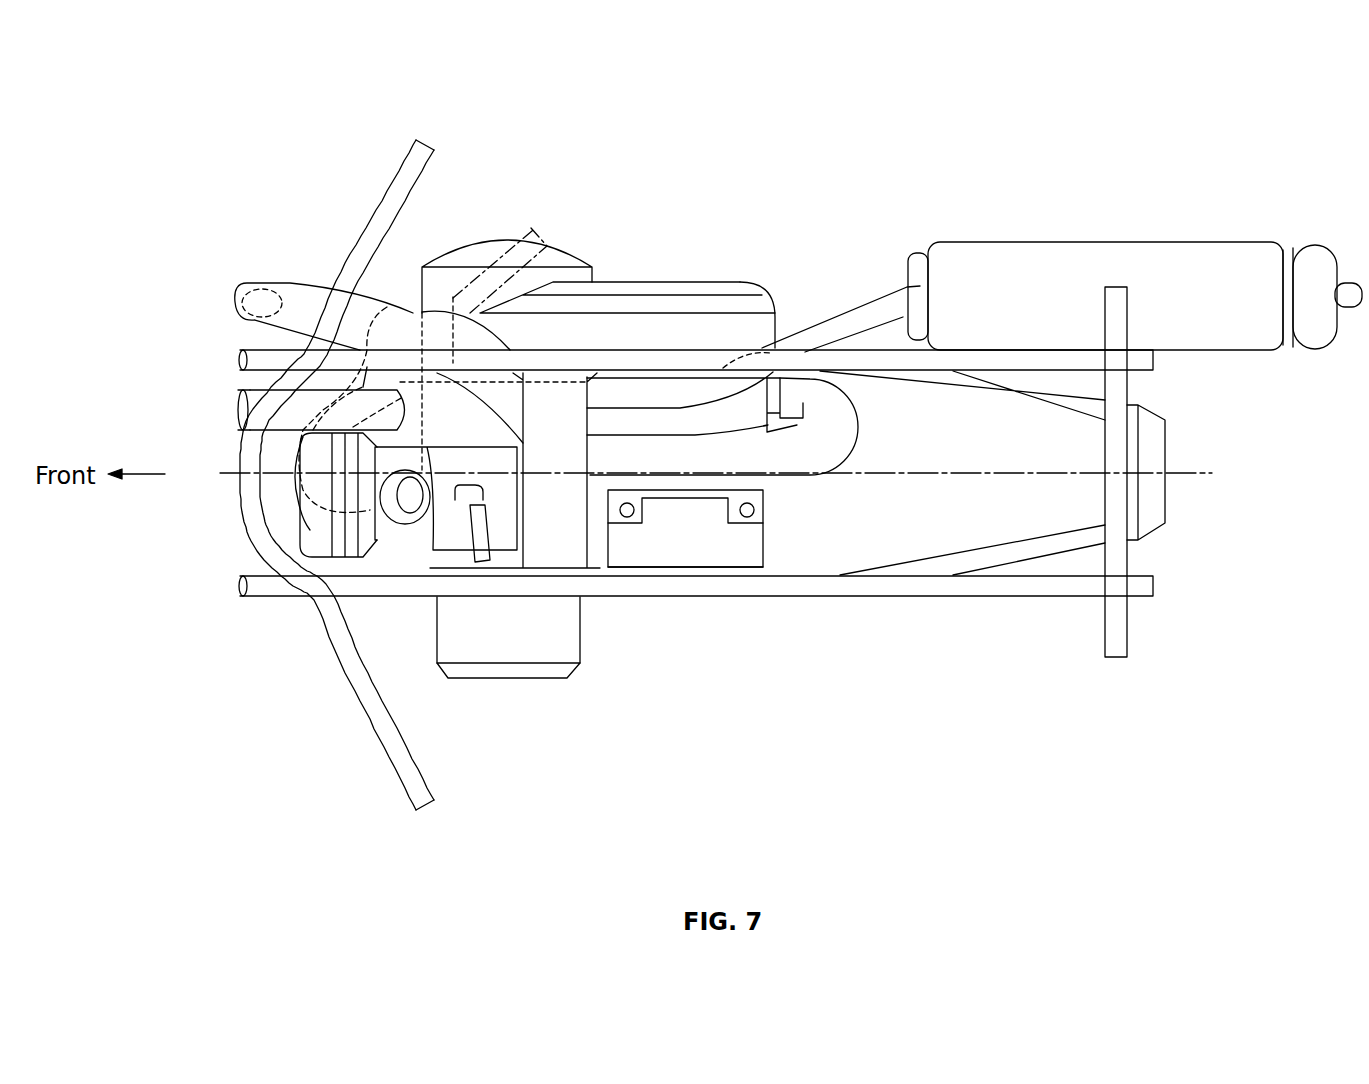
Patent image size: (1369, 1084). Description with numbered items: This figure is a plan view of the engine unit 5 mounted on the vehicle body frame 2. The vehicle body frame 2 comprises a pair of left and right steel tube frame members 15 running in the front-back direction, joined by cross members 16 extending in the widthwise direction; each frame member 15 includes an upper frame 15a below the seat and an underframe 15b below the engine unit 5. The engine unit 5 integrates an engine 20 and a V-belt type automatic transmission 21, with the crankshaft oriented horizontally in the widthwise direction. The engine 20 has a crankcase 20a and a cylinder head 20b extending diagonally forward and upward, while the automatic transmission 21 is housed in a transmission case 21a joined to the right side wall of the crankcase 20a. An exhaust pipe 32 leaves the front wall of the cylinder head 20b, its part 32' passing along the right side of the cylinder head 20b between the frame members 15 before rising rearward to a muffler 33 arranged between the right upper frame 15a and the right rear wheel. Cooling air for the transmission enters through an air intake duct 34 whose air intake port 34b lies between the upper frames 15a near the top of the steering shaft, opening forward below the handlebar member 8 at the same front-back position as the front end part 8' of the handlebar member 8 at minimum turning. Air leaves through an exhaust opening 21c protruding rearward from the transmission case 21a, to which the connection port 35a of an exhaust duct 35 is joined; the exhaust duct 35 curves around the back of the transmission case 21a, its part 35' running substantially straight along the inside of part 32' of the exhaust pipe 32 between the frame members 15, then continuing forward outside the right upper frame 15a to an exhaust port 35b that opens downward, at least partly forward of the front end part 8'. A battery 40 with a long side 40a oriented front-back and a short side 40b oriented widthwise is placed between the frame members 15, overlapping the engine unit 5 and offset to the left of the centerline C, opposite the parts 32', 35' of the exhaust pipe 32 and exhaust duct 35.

The handlebar member 8 is at (393, 469).
The exhaust port 35b is at (250, 282).
The air intake duct 34 is at (366, 326).
The engine unit 5 is at (673, 270).
The automatic transmission 21 is at (640, 270).
The transmission case 21a is at (715, 280).
The exhaust pipe 32 is at (841, 281).
The connection port 35a is at (773, 372).
The muffler 33 is at (1225, 238).
The upper frame 15a is at (958, 355).
The frame member 15 is at (1030, 337).
The underframe 15b is at (1068, 397).
The part of exhaust pipe 32' is at (680, 363).
The part of exhaust duct 35' is at (677, 381).
The exhaust duct 35 is at (771, 426).
The centerline C is at (1197, 472).
The air intake port 34b is at (240, 412).
The exhaust opening 21c is at (793, 340).
The cross member 16 is at (1167, 498).
The short side 40b is at (765, 520).
The battery 40 is at (770, 546).
The long side 40a is at (693, 568).
The cylinder head 20b is at (387, 540).
The engine 20 is at (591, 664).
The crankcase 20a is at (433, 653).
The vehicle body frame 2 is at (875, 612).
The front end part of handlebar member 8' is at (192, 518).